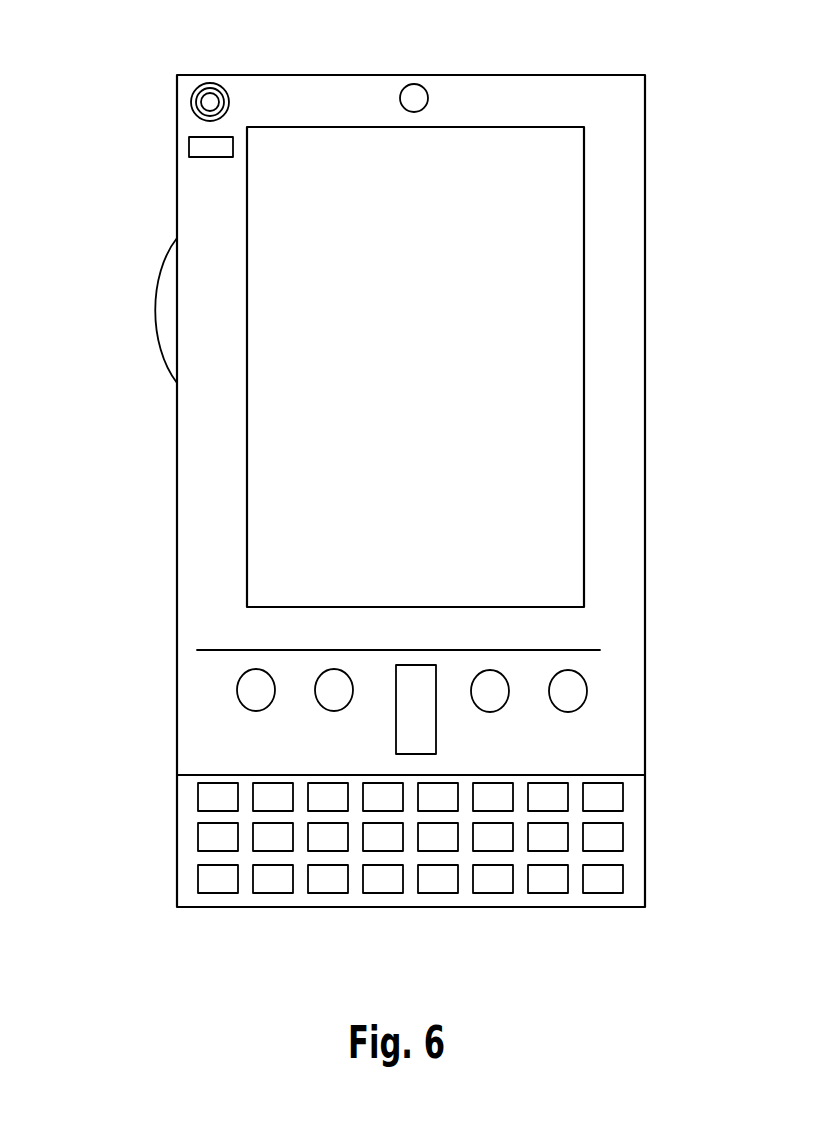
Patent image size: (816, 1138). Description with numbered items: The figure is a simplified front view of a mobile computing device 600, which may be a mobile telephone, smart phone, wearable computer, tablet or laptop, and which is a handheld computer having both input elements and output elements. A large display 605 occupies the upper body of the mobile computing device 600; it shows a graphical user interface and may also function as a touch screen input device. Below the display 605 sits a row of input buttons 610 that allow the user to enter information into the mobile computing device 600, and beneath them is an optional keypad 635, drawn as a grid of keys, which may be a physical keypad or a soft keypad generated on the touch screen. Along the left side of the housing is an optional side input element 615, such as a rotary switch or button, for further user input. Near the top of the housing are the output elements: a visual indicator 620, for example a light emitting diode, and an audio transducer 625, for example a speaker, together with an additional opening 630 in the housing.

The mobile computing device 600 is at (632, 92).
The display 605 is at (352, 525).
The input buttons 610 is at (415, 713).
The side input element 615 is at (168, 309).
The visual indicator 620 is at (190, 148).
The audio transducer 625 is at (192, 101).
The audio transducer (speaker) 630 is at (430, 97).
The keypad 635 is at (186, 884).